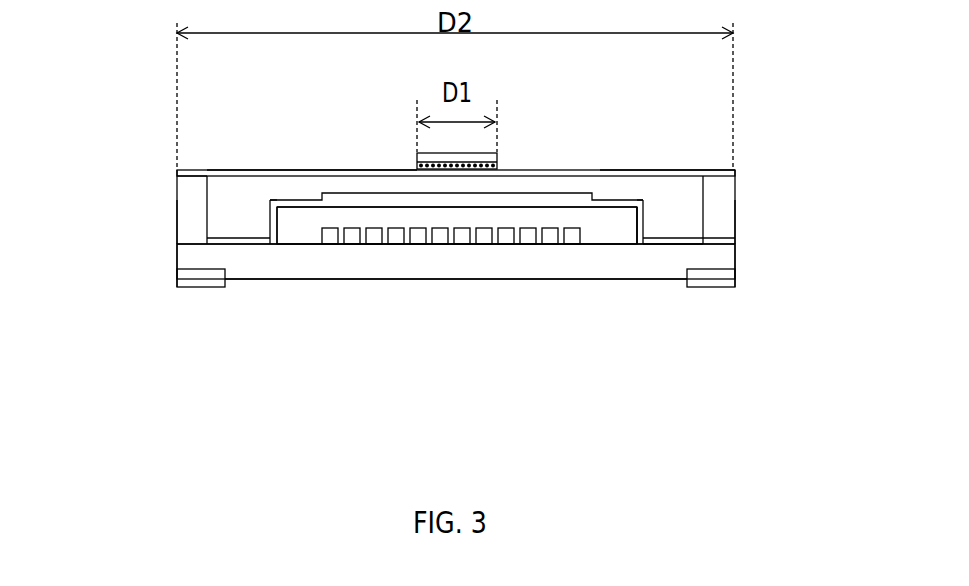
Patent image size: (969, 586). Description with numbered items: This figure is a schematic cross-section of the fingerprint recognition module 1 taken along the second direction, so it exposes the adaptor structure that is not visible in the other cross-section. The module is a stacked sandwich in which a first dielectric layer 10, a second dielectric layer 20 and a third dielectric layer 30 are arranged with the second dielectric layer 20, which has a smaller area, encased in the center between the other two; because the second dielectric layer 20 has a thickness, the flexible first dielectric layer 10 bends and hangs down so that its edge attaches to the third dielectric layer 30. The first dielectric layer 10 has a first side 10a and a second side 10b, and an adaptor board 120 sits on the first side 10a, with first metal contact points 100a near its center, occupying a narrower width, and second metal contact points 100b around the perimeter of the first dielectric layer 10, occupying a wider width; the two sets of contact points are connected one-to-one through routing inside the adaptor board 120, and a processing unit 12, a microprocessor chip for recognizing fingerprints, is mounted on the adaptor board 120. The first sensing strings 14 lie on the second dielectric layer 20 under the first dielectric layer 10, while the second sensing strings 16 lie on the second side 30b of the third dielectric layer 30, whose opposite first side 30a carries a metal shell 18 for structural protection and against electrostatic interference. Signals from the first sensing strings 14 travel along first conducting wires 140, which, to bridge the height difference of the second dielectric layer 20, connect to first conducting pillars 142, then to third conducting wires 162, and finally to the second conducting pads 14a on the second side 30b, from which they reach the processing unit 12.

The fingerprint recognition module 1 is at (837, 63).
The first dielectric layer 10 is at (213, 220).
The first side of the first dielectric layer 10a is at (673, 170).
The second side of the first dielectric layer 10b is at (238, 233).
The processing unit 12 is at (482, 153).
The first sensing strings 14 is at (333, 192).
The second conducting pads 14a is at (177, 243).
The second sensing strings 16 is at (352, 246).
The metal shell 18 is at (735, 285).
The second dielectric layer 20 is at (297, 235).
The third dielectric layer 30 is at (735, 257).
The first side of the third dielectric layer 30a is at (410, 283).
The second side of the third dielectric layer 30b is at (523, 247).
The first metal contact points 100a is at (417, 167).
The second metal contact points 100b is at (177, 235).
The adaptor board 120 is at (207, 170).
The first conducting wires 140 is at (617, 170).
The first conducting pillars 142 is at (637, 243).
The third conducting wires 162 is at (673, 245).